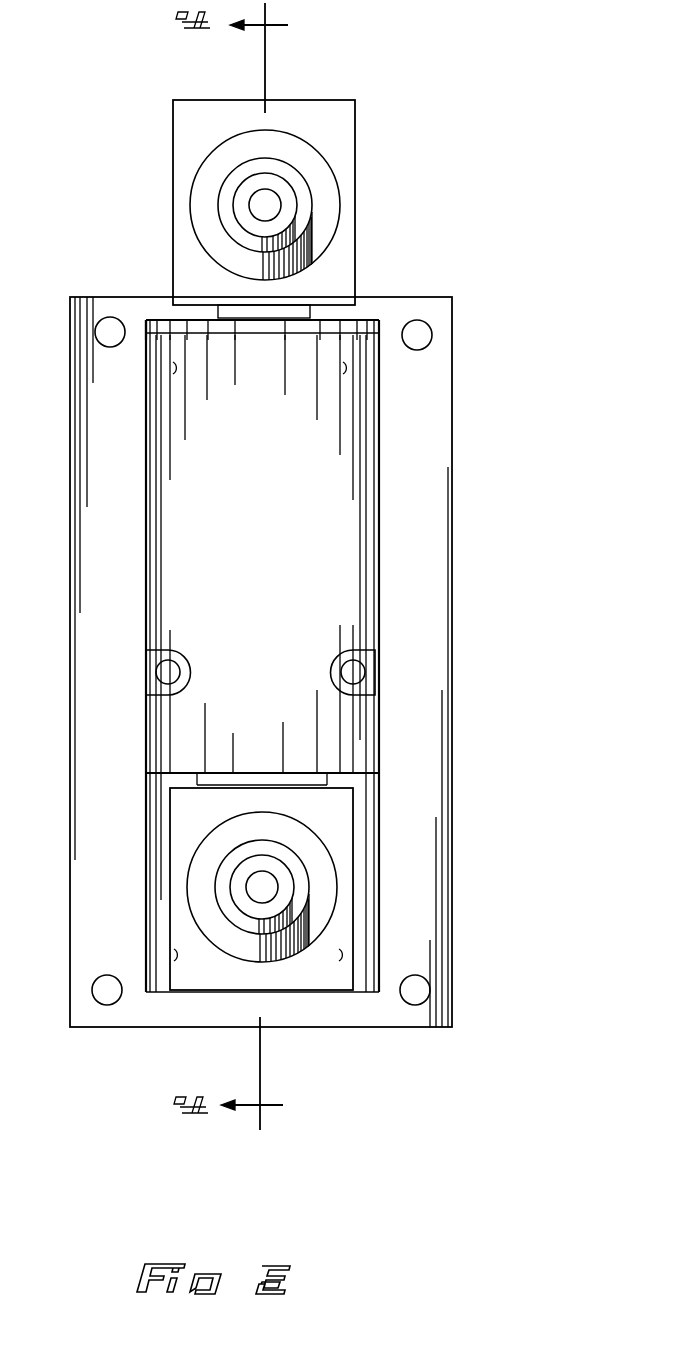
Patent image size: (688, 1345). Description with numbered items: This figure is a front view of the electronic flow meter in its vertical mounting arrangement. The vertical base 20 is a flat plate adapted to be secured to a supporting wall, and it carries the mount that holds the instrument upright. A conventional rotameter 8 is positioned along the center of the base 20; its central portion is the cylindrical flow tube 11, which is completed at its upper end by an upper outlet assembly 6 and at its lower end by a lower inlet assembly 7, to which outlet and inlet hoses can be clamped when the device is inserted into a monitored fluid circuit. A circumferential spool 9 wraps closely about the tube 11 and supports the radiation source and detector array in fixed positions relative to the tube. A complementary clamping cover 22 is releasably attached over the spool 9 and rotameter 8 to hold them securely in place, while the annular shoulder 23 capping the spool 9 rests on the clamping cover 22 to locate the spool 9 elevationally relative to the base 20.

The upper outlet assembly 6 is at (170, 253).
The lower inlet assembly 7 is at (192, 995).
The rotameter 8 is at (215, 87).
The spool 9 is at (146, 322).
The flow tube 11 is at (293, 315).
The base 20 is at (437, 425).
The clamping cover 22 is at (268, 568).
The annular shoulder 23 is at (363, 320).